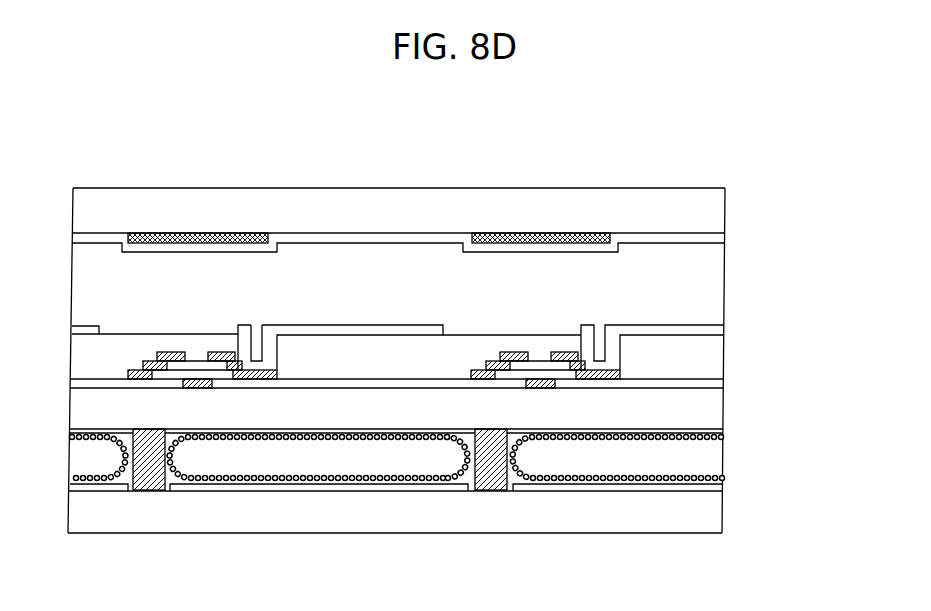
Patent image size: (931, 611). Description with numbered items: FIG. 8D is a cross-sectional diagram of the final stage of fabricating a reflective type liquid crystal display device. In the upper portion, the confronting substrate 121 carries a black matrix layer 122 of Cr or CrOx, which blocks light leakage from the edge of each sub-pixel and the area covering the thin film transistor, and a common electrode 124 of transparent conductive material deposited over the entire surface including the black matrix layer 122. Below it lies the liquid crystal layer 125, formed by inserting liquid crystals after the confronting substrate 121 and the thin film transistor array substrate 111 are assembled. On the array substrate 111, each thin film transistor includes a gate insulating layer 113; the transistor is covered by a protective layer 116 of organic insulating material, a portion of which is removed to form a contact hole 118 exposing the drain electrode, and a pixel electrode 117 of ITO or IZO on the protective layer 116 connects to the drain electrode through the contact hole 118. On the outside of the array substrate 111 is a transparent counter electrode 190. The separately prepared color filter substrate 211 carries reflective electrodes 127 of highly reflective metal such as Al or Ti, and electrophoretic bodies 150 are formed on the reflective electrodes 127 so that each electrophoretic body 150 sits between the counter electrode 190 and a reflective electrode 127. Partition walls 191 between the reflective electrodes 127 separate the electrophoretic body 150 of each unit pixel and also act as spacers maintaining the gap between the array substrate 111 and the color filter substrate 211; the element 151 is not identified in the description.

The confronting substrate 121 is at (719, 213).
The common electrode 124 is at (717, 241).
The black matrix layer 122 is at (573, 245).
The liquid crystal layer 125 is at (719, 288).
The contact hole 118 is at (262, 325).
The pixel electrode 117 is at (722, 333).
The protective layer 116 is at (718, 359).
The gate insulating layer 113 is at (720, 386).
The thin film transistor array substrate 111 is at (718, 417).
The counter electrode 190 is at (722, 433).
The reflective electrode 127 is at (718, 491).
The color filter substrate 211 is at (715, 521).
The partition wall 191 is at (148, 481).
The electrophoretic body 150 is at (387, 465).
The capsule wall 151 is at (447, 478).